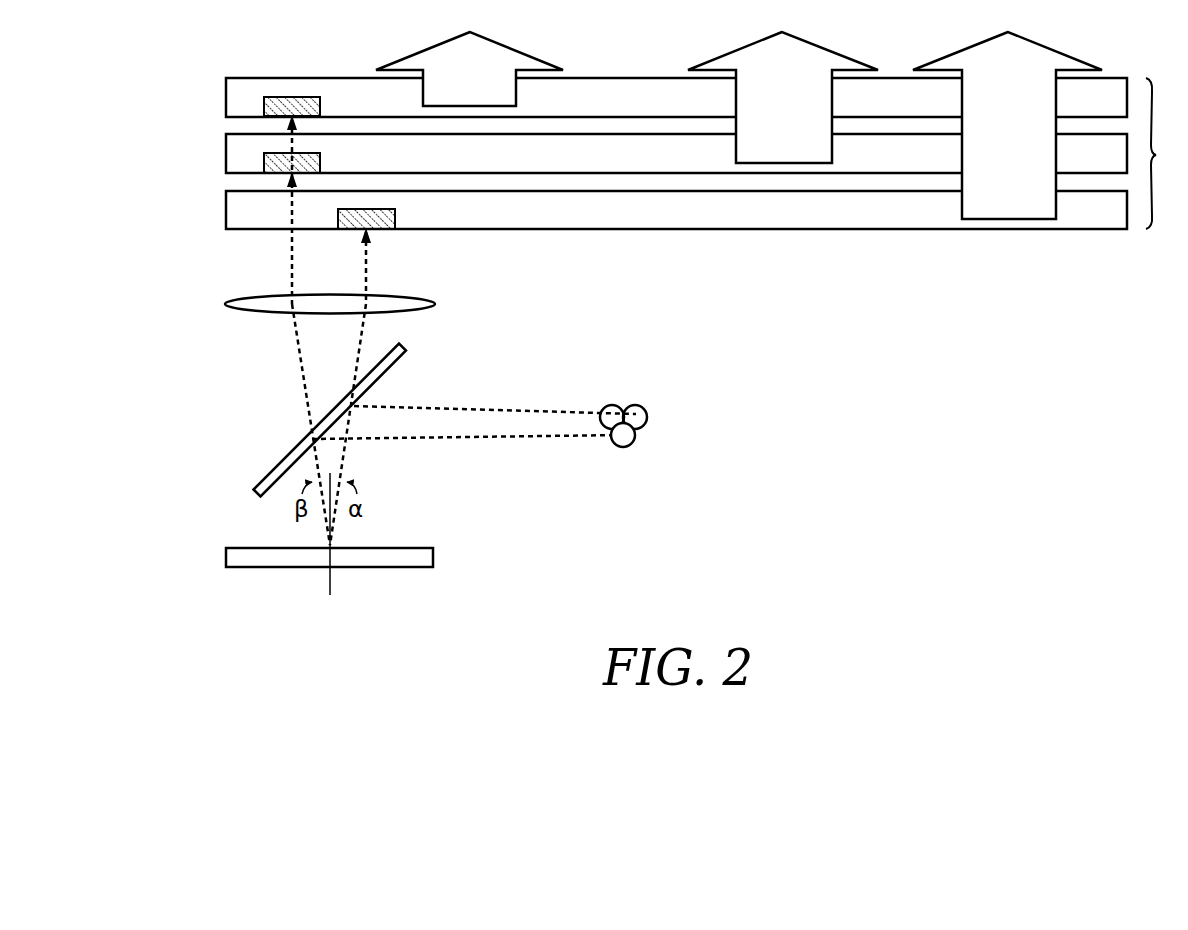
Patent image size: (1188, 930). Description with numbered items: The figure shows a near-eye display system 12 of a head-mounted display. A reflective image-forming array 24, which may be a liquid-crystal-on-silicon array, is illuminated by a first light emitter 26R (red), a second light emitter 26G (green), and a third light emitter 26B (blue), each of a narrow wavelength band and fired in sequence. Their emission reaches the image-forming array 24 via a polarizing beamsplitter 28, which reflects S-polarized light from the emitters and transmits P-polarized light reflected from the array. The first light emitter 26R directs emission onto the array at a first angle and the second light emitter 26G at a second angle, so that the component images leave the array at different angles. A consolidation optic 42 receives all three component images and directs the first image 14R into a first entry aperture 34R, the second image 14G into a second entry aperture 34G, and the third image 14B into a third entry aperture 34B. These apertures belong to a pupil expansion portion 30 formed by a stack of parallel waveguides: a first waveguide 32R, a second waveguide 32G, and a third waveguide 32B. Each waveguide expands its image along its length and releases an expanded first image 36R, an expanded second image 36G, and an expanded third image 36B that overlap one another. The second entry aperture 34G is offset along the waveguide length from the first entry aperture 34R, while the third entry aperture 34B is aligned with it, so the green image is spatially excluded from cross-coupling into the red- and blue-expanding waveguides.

The near-eye display system 12 is at (1005, 425).
The first image 14R is at (228, 330).
The third image 14B is at (292, 265).
The second image 14G is at (366, 281).
The reflective image-forming array 24 is at (433, 557).
The third light emitter 26B is at (605, 406).
The first light emitter 26R is at (647, 414).
The second light emitter 26G is at (635, 440).
The polarizing beamsplitter 28 is at (254, 490).
The pupil expansion portion 30 is at (1162, 153).
The first waveguide 32R is at (695, 109).
The third waveguide 32B is at (695, 166).
The second waveguide 32G is at (695, 223).
The first entry aperture 34R is at (263, 107).
The third entry aperture 34B is at (263, 162).
The second entry aperture 34G is at (383, 230).
The expanded first image 36R is at (488, 81).
The expanded third image 36B is at (803, 111).
The expanded second image 36G is at (1027, 139).
The consolidation optic 42 is at (435, 304).